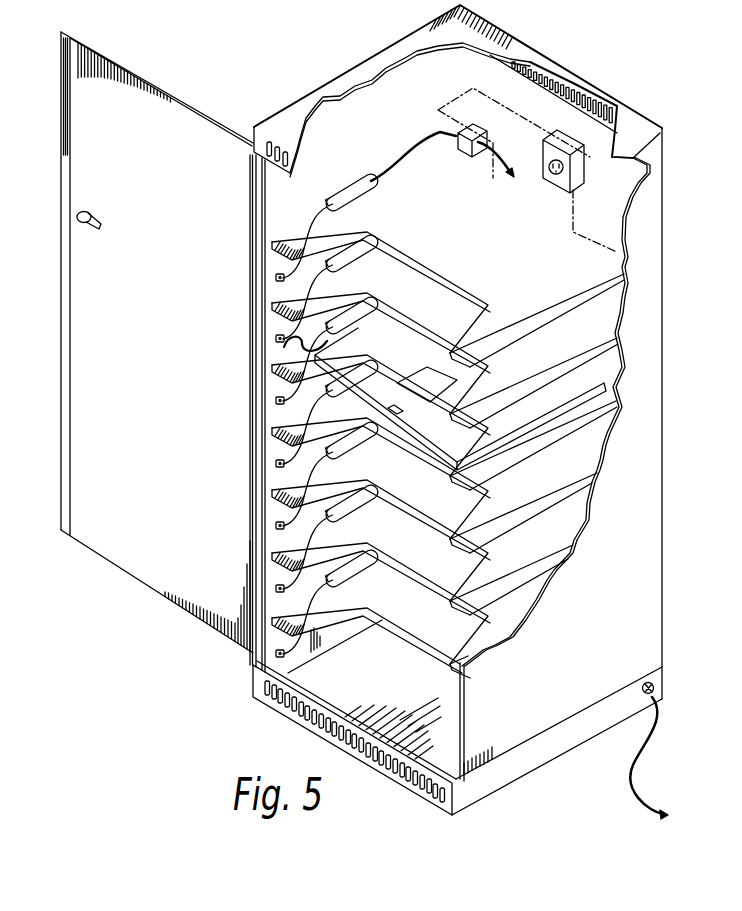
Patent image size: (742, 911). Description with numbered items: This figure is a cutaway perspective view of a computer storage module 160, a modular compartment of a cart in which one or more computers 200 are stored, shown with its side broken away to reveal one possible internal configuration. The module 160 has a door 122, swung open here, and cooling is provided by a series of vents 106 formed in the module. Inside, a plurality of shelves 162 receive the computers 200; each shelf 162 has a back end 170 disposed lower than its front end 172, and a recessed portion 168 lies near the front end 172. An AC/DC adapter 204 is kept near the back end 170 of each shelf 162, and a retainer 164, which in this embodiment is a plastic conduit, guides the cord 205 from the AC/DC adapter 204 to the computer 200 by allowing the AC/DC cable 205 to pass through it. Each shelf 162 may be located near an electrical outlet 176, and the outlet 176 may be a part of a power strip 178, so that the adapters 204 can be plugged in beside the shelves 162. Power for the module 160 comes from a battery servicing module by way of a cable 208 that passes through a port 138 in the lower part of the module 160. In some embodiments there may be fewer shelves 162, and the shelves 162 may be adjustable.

The computer storage module 160 is at (305, 61).
The vents 106 is at (266, 150).
The door 122 is at (108, 563).
The shelves 162 is at (472, 248).
The computer 200 is at (403, 362).
The retainer 164 is at (356, 184).
The front end 172 is at (270, 481).
The cord 205 is at (304, 240).
The back end 170 is at (478, 128).
The AC/DC adapter 204 is at (466, 150).
The power strip 178 is at (540, 160).
The electrical outlet 176 is at (551, 190).
The recessed portion 168 is at (407, 632).
The port 138 is at (655, 686).
The cable 208 is at (628, 790).